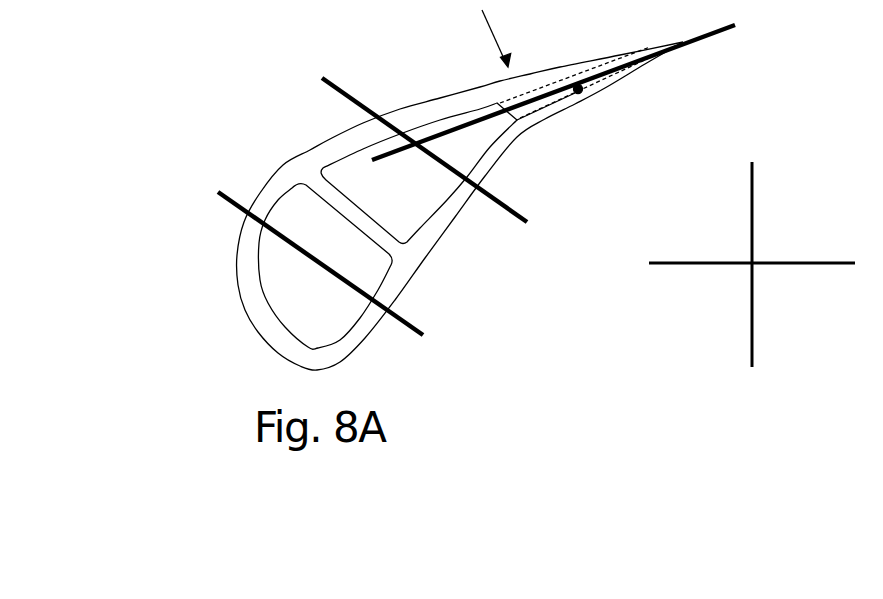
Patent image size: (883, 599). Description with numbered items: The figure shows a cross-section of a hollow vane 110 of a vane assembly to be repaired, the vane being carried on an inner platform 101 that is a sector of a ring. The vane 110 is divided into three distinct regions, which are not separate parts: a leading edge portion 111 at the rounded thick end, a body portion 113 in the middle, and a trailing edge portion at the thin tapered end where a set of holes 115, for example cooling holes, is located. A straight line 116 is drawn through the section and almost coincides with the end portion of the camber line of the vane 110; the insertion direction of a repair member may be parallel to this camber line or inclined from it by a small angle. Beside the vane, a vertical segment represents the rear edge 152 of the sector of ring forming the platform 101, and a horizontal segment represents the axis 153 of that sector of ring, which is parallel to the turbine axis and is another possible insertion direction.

The inner platform 101 is at (603, 283).
The vane 110 is at (456, 265).
The leading edge portion 111 is at (237, 330).
The body portion 113 is at (280, 155).
The holes 115 is at (580, 92).
The straight line 116 is at (553, 80).
The rear edge 152 is at (733, 263).
The axis 153 is at (753, 244).